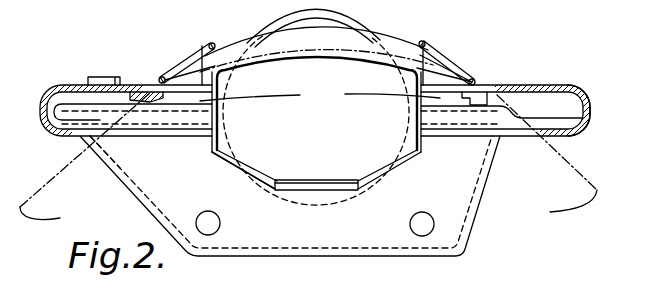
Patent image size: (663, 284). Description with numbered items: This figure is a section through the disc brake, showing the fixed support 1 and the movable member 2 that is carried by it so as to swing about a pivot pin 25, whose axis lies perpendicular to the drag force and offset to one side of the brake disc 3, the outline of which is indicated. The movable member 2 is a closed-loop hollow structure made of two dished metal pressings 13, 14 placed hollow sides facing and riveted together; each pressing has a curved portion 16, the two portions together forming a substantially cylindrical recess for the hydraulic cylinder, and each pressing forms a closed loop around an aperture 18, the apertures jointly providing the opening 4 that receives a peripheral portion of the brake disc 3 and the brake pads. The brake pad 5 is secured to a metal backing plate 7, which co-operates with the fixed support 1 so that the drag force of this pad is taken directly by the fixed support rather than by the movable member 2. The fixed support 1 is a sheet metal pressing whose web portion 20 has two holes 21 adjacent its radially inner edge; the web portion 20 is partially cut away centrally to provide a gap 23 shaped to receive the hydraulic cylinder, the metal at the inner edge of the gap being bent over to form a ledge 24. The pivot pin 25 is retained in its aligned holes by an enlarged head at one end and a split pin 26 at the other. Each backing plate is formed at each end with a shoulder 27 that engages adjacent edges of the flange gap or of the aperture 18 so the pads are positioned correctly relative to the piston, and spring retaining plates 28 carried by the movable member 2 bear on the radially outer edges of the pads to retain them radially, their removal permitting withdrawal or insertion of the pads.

The fixed support 1 is at (474, 228).
The movable member 2 is at (509, 82).
The brake disc 3 is at (58, 170).
The opening 4 is at (153, 74).
The brake pad 5 is at (334, 152).
The metal backing plate 7 is at (412, 46).
The dished metal pressing 13 is at (565, 87).
The dished metal pressing 14 is at (544, 138).
The curved portion 16 is at (360, 24).
The aperture 18 is at (142, 84).
The web portion 20 is at (403, 242).
The holes 21 is at (220, 220).
The gap 23 is at (250, 171).
The ledge 24 is at (338, 190).
The pivot pin 25 is at (86, 88).
The split pin 26 is at (112, 154).
The shoulder 27 is at (320, 93).
The spring retaining plates 28 is at (190, 62).